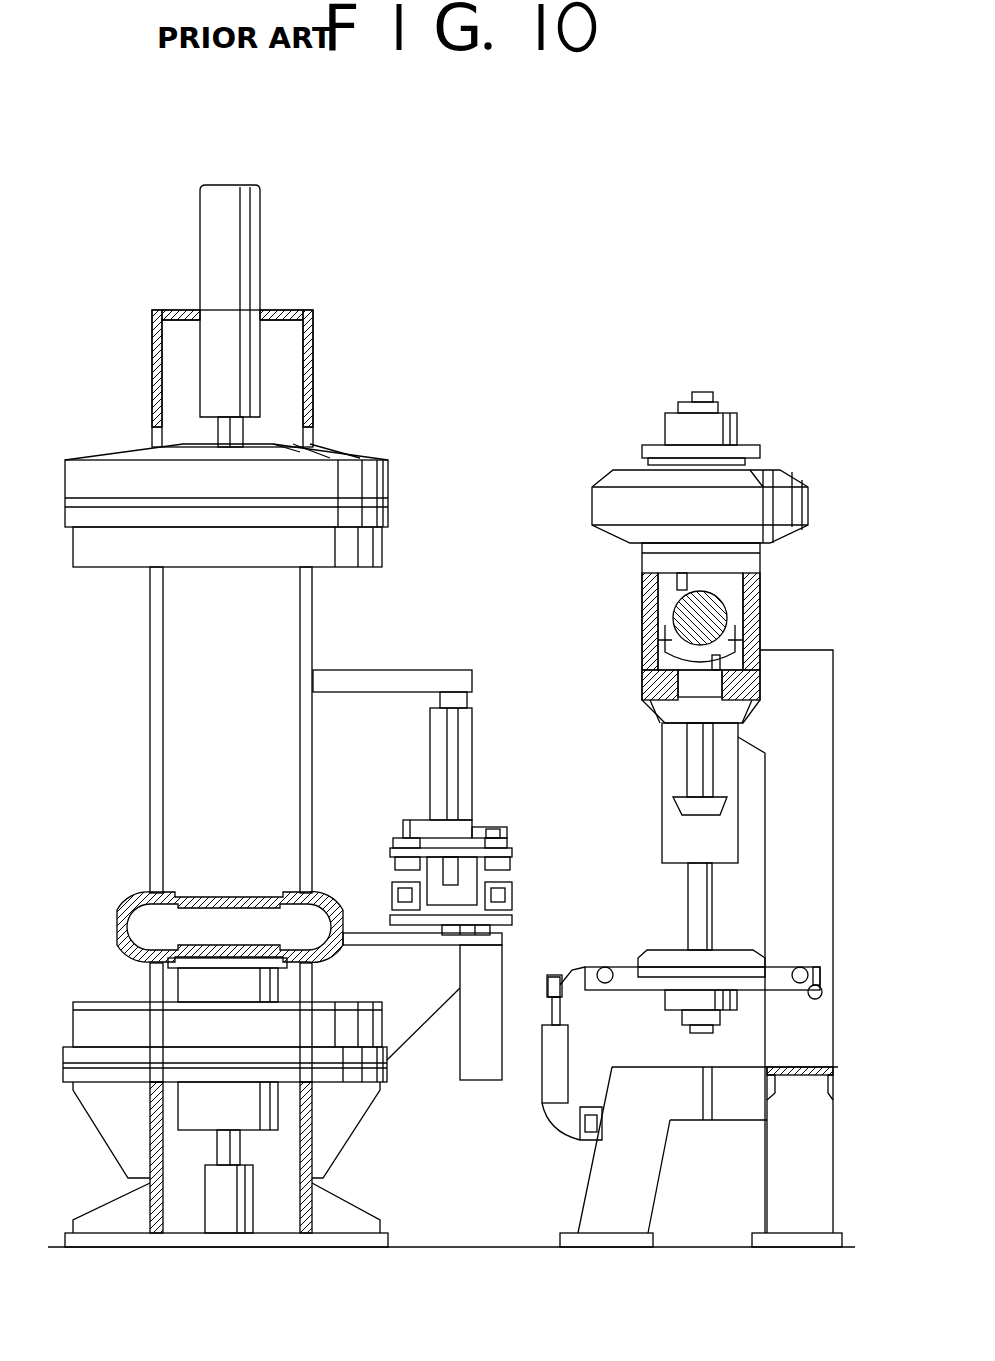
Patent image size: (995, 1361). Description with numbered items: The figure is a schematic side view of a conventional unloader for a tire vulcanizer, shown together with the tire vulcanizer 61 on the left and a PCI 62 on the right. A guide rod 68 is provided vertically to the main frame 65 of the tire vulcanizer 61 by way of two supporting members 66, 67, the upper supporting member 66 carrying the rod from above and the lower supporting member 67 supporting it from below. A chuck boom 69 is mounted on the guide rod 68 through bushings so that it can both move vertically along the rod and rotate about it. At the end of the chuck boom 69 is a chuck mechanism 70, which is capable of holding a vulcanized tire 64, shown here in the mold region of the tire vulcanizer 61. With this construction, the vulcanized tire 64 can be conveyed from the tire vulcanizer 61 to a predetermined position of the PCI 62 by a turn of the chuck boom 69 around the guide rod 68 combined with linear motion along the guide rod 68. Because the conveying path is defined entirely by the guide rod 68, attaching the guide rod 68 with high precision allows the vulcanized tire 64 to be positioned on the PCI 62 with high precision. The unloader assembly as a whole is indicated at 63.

The tire vulcanizer 61 is at (330, 374).
The PCI 62 is at (810, 462).
The transfer mechanism 63 is at (407, 659).
The vulcanized tire 64 is at (128, 892).
The main frame 65 is at (306, 604).
The supporting member 66 is at (457, 675).
The supporting member 67 is at (403, 940).
The guide rod 68 is at (458, 700).
The chuck boom 69 is at (420, 827).
The chuck mechanism 70 is at (536, 854).